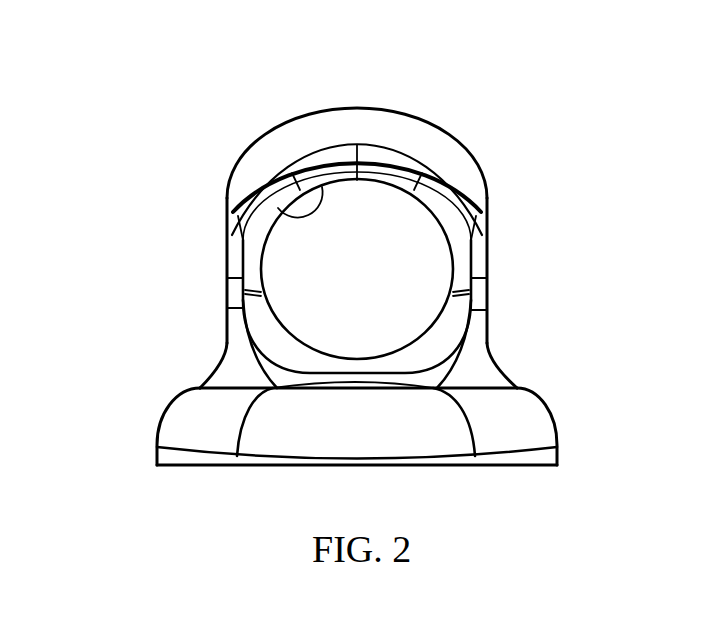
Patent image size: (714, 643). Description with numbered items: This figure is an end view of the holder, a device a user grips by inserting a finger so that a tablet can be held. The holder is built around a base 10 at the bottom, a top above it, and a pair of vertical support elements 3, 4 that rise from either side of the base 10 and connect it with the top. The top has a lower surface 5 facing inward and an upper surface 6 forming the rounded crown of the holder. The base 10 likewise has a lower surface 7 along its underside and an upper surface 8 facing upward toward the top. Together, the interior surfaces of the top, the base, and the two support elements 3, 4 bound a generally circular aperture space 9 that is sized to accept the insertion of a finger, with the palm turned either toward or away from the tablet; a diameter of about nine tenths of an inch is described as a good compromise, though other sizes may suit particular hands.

The vertical support element 3 is at (230, 282).
The vertical support element 4 is at (487, 253).
The lower surface of the top 5 is at (280, 202).
The upper surface of the top 6 is at (350, 112).
The lower surface of the base 7 is at (443, 465).
The upper surface of the base 8 is at (362, 355).
The aperture space 9 is at (390, 228).
The base 10 is at (190, 420).